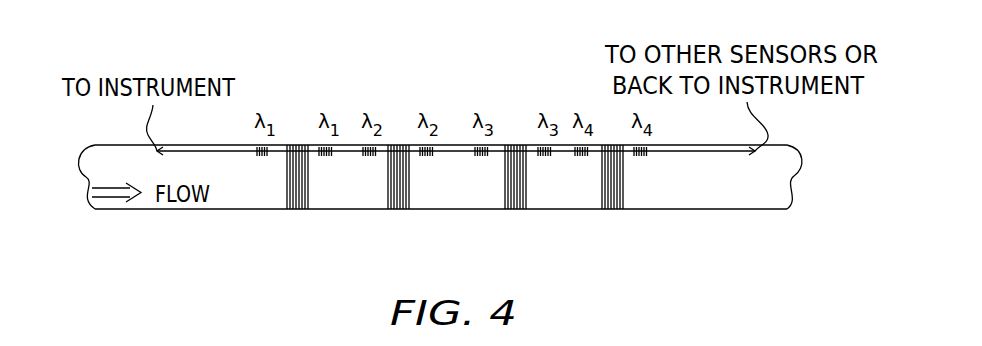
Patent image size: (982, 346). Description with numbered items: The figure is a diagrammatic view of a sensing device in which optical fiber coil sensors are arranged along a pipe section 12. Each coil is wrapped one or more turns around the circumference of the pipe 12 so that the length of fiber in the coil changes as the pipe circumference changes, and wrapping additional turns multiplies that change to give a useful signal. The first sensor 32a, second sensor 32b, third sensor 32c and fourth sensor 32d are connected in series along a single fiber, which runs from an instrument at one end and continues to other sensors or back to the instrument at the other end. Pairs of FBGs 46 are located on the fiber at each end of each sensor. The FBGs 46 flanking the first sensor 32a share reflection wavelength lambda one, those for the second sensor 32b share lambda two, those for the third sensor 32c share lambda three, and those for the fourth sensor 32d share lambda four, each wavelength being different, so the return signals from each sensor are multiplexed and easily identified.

The pipe section 12 is at (748, 190).
The first sensor 32a is at (300, 211).
The second sensor 32b is at (400, 211).
The third sensor 32c is at (515, 211).
The fourth sensor 32d is at (612, 211).
The FBG 46 is at (448, 174).